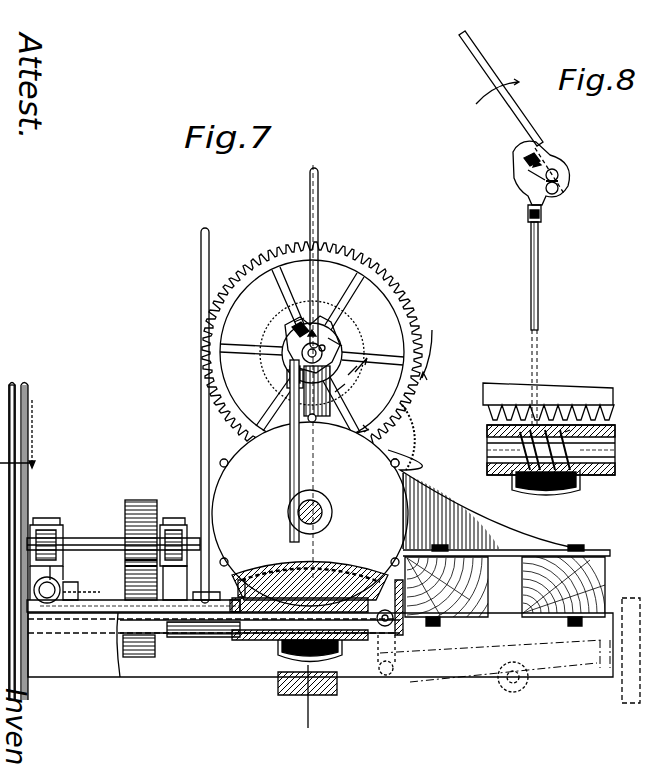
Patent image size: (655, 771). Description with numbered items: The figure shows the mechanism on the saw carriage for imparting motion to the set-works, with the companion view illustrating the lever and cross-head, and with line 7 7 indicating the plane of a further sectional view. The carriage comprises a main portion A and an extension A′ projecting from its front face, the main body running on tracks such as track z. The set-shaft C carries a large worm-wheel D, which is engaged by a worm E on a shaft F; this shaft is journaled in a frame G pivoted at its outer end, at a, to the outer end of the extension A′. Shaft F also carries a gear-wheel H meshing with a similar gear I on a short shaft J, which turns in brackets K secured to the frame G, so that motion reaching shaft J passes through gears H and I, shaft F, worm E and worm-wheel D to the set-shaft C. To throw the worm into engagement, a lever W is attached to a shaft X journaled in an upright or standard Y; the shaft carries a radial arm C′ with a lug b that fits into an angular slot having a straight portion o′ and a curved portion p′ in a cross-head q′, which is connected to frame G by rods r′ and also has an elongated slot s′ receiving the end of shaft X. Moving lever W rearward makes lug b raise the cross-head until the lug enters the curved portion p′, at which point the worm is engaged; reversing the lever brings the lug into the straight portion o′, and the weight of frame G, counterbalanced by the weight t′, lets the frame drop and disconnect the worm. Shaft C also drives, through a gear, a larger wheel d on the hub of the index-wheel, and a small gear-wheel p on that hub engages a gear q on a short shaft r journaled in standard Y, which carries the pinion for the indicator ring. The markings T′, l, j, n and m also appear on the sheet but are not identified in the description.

In FIG. 7, the section line 7 is at (313, 165).
In FIG. 7, the lever W is at (311, 212).
In FIG. 8, the lever W is at (486, 78).
In FIG. 7, the vertical rod T′ is at (201, 432).
In FIG. 7, the gear-wheel d is at (317, 352).
In FIG. 7, the small gear-wheel p is at (365, 332).
In FIG. 7, the gear q is at (416, 438).
In FIG. 7, the cross-head q′ is at (296, 362).
In FIG. 8, the cross-head q′ is at (548, 198).
In FIG. 7, the spoke l is at (346, 382).
In FIG. 7, the radial arm C′ is at (312, 339).
In FIG. 8, the radial arm C′ is at (535, 165).
In FIG. 7, the straight portion of angular slot o′ is at (284, 337).
In FIG. 8, the straight portion of angular slot o′ is at (532, 158).
In FIG. 7, the lug b is at (298, 322).
In FIG. 8, the lug b is at (528, 160).
In FIG. 7, the curved portion of angular slot p′ is at (313, 330).
In FIG. 8, the curved portion of angular slot p′ is at (540, 160).
In FIG. 7, the shaft X is at (325, 347).
In FIG. 8, the shaft X is at (556, 172).
In FIG. 7, the elongated slot s′ is at (345, 342).
In FIG. 8, the elongated slot s′ is at (560, 188).
In FIG. 7, the upright or standard Y is at (320, 418).
In FIG. 7, the rods r′ is at (292, 447).
In FIG. 8, the rods r′ is at (542, 323).
In FIG. 7, the track z is at (310, 514).
In FIG. 7, the set-shaft C is at (332, 512).
In FIG. 7, the worm-wheel D is at (340, 580).
In FIG. 8, the worm-wheel D is at (548, 401).
In FIG. 7, the worm E is at (279, 648).
In FIG. 8, the worm E is at (578, 432).
In FIG. 7, the shaft F is at (228, 635).
In FIG. 8, the shaft F is at (492, 440).
In FIG. 7, the frame G is at (96, 604).
In FIG. 8, the frame G is at (536, 482).
In FIG. 7, the gear-wheel H is at (138, 640).
In FIG. 7, the gear I is at (140, 504).
In FIG. 7, the short shaft J is at (102, 538).
In FIG. 7, the brackets K is at (42, 530).
In FIG. 7, the pivot a is at (48, 595).
In FIG. 8, the pivot a is at (647, 294).
In FIG. 7, the carriage extension A′ is at (90, 657).
In FIG. 7, the main portion of carriage A is at (530, 645).
In FIG. 7, the weight t′ is at (622, 698).
In FIG. 7, the short shaft r is at (305, 704).
In FIG. 8, the part j is at (641, 266).
In FIG. 8, the part n is at (641, 342).
In FIG. 8, the part m is at (644, 369).